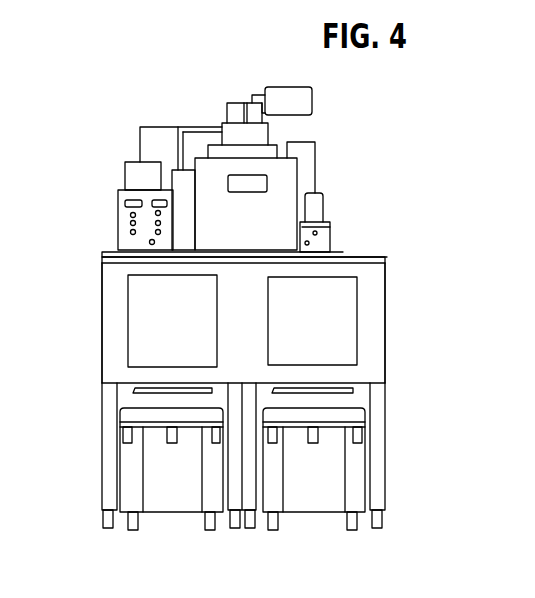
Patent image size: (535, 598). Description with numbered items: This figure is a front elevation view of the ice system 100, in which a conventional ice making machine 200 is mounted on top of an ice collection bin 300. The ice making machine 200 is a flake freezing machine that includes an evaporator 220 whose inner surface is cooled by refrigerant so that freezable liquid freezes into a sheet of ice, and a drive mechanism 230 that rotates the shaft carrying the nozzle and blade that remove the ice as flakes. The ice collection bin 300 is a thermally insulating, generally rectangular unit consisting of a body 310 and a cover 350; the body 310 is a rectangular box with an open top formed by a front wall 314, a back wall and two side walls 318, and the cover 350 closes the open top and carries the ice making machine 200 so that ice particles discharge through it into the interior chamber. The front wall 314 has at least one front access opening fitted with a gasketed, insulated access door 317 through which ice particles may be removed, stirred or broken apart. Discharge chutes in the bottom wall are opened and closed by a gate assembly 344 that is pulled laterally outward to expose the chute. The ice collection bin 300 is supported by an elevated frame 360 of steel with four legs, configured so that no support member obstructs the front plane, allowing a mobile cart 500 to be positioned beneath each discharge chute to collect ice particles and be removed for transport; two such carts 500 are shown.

The ice system 100 is at (114, 125).
The ice making machine 200 is at (338, 181).
The evaporator 220 is at (198, 167).
The drive mechanism 230 is at (235, 105).
The ice collection bin 300 is at (94, 436).
The body 310 is at (97, 285).
The front wall 314 is at (262, 371).
The access door 317 is at (325, 348).
The side walls 318 is at (102, 330).
The gate assembly 344 is at (148, 397).
The cover 350 is at (369, 250).
The elevated frame 360 is at (393, 454).
The cart 500 is at (171, 498).